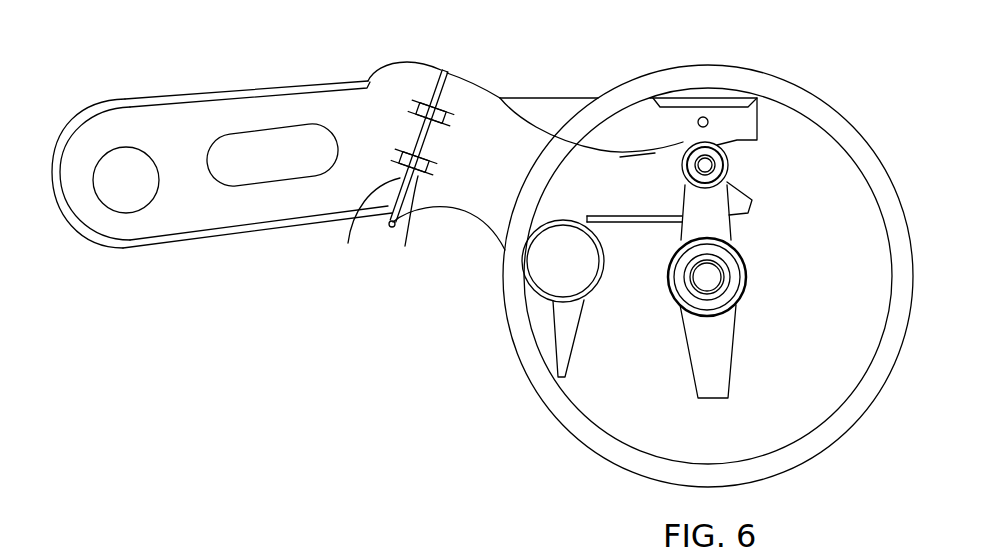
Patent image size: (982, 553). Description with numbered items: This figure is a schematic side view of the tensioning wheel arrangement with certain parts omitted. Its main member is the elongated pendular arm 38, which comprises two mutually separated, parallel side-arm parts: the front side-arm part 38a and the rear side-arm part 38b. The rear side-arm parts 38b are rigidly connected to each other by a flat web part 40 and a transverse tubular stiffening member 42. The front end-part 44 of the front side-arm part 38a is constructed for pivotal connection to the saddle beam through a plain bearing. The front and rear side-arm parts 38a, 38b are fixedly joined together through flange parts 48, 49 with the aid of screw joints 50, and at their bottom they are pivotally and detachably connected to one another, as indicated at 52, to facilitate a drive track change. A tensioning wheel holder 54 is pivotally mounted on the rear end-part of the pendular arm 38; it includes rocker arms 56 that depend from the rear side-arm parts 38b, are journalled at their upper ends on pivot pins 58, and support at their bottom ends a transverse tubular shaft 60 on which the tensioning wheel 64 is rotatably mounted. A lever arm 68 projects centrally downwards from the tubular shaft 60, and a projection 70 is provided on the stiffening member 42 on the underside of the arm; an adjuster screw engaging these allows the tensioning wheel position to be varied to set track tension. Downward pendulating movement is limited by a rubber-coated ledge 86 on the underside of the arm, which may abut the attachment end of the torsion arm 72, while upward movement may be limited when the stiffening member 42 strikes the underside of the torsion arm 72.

The pendular arm 38 is at (472, 66).
The front side-arm part 38a is at (283, 112).
The rear side-arm part 38b is at (477, 201).
The front end-part 44 is at (70, 113).
The ledge 86 is at (413, 64).
The screw joints 50 is at (418, 108).
The pivotal and detachable connection 52 is at (390, 227).
The flange part 48 is at (348, 243).
The flange part 49 is at (405, 246).
The torsion arm 72 is at (550, 113).
The tensioning wheel 64 is at (818, 118).
The pivot pin 58 is at (698, 165).
The tensioning wheel holder 54 is at (731, 207).
The rocker arm 56 is at (714, 222).
The transverse tubular shaft 60 is at (740, 281).
The flat web part 40 is at (635, 224).
The transverse tubular stiffening member 42 is at (593, 287).
The projection 70 is at (556, 353).
The lever arm 68 is at (722, 342).